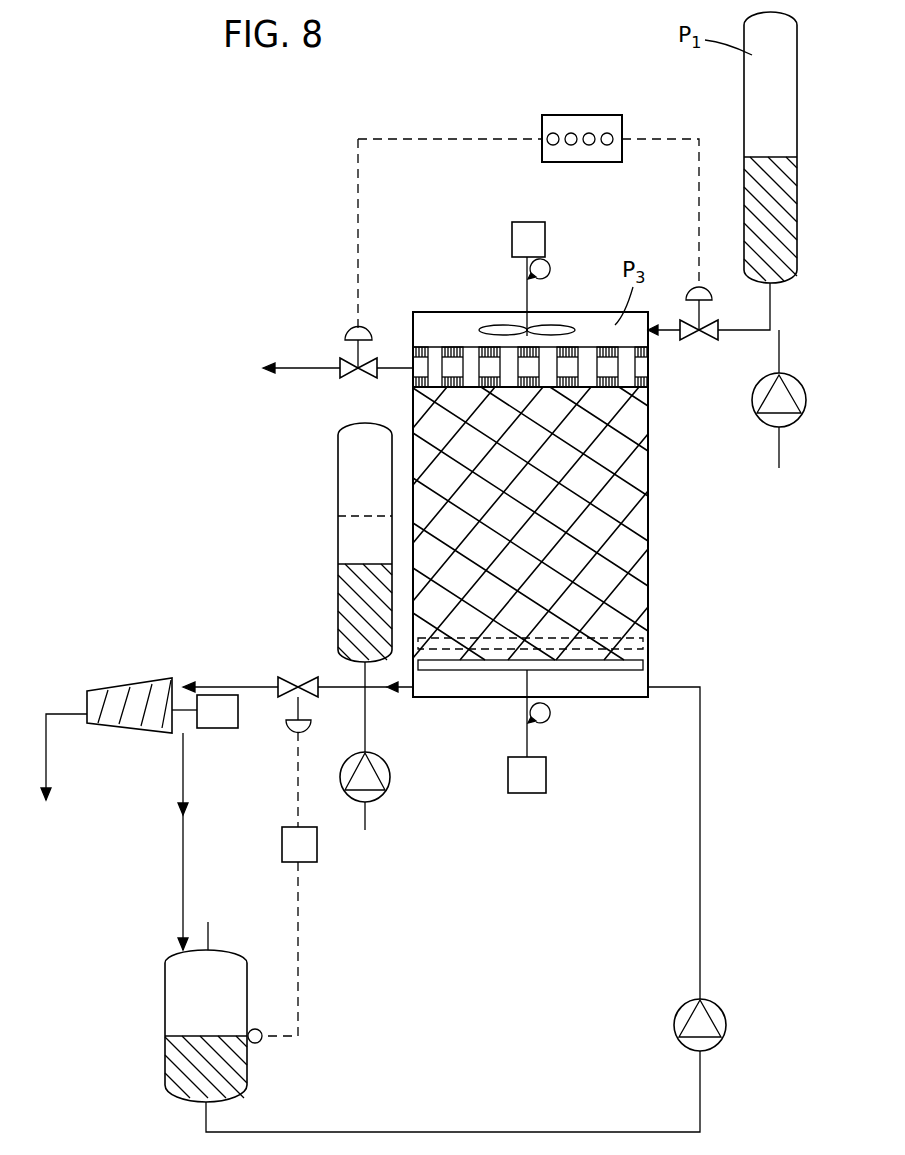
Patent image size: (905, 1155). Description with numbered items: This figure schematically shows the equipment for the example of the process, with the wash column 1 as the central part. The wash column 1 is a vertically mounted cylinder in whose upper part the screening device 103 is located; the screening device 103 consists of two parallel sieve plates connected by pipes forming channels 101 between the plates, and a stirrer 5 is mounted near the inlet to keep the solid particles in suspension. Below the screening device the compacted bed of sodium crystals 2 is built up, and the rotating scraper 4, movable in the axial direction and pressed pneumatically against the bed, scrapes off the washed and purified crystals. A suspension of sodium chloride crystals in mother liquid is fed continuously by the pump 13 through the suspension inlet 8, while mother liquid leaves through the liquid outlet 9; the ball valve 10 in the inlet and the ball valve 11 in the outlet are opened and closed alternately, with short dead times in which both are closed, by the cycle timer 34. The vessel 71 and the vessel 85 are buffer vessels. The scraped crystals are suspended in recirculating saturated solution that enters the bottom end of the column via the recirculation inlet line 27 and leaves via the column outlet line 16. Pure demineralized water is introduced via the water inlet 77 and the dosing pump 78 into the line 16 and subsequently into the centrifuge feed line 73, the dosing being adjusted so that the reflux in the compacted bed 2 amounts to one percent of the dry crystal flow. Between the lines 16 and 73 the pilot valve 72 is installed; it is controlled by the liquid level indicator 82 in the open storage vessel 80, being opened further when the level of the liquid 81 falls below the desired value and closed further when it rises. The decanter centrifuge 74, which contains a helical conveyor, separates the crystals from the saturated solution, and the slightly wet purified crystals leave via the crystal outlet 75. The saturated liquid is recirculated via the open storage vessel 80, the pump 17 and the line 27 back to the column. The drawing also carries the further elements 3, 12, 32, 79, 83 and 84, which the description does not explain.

The wash column 1 is at (650, 533).
The compacted bed of sodium crystals 2 is at (635, 615).
The heater 3 is at (539, 340).
The rotating scraper 4 is at (575, 665).
The stirrer 5 is at (560, 333).
The suspension inlet 8 is at (741, 330).
The liquid outlet 9 is at (396, 368).
The ball valve 10 is at (705, 337).
The ball valve 11 is at (345, 378).
The supply line 12 is at (781, 450).
The pump 13 is at (765, 427).
The column outlet line 16 is at (398, 695).
The pump 17 is at (676, 1017).
The recirculation inlet line 27 is at (702, 792).
The vent line 32 is at (305, 368).
The cycle timer 34 is at (585, 118).
The buffer vessel 71 is at (744, 118).
The pilot valve 72 is at (284, 680).
The centrifuge feed line 73 is at (212, 687).
The decanter centrifuge 74 is at (135, 680).
The crystal outlet 75 is at (48, 762).
The water inlet 77 is at (368, 823).
The dosing pump 78 is at (388, 775).
The drain line 79 is at (185, 852).
The open storage vessel 80 is at (195, 1012).
The liquid 81 is at (170, 1065).
The liquid level indicator 82 is at (258, 1045).
The level controller 83 is at (318, 856).
The reservoir 84 is at (323, 542).
The buffer vessel 85 is at (340, 604).
The channels 101 is at (432, 352).
The screening device 103 is at (452, 350).